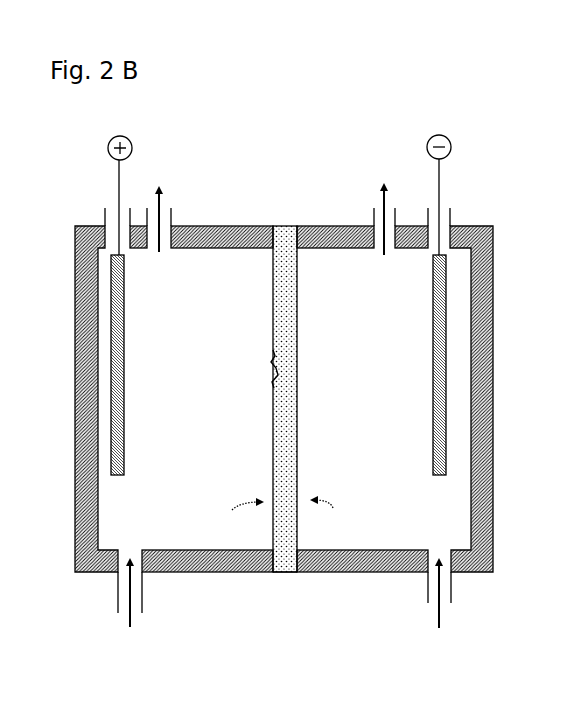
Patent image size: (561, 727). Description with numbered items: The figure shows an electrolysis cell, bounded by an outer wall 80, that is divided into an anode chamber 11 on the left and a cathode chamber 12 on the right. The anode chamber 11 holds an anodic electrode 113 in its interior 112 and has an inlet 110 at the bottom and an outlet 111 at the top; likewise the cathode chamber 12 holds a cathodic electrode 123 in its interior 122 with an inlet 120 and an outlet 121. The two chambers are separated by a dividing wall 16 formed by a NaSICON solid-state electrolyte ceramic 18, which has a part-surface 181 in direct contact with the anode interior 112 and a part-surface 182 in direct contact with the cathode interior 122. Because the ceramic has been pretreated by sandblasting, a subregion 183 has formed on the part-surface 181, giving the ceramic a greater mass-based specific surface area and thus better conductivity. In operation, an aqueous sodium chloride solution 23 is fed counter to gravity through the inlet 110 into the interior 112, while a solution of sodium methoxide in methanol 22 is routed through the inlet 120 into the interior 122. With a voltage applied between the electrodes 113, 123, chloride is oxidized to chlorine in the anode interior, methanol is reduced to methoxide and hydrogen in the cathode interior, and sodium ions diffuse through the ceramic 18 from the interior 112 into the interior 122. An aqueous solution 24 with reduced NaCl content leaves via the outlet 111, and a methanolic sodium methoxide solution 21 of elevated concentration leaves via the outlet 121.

The anode chamber 11 is at (70, 397).
The cathode chamber 12 is at (498, 397).
The dividing wall 16 is at (285, 576).
The NaSICON solid-state electrolyte ceramic 18 is at (275, 301).
The subregion 183 is at (277, 357).
The outer wall 80 is at (255, 575).
The anodic electrode 113 is at (127, 318).
The cathodic electrode 123 is at (428, 310).
The outlet of the anode chamber 111 is at (172, 216).
The outlet of the cathode chamber 121 is at (373, 215).
The inlet of the anode chamber 110 is at (108, 583).
The inlet of the cathode chamber 120 is at (460, 593).
The interior of the anode chamber 112 is at (170, 414).
The interior of the cathode chamber 122 is at (373, 414).
The aqueous solution 24 is at (152, 172).
The methanolic solution of sodium methoxide 21 is at (392, 194).
The aqueous solution of sodium chloride 23 is at (135, 617).
The solution of sodium methoxide in methanol 22 is at (430, 613).
The part-surface 181 is at (235, 520).
The part-surface 182 is at (335, 518).